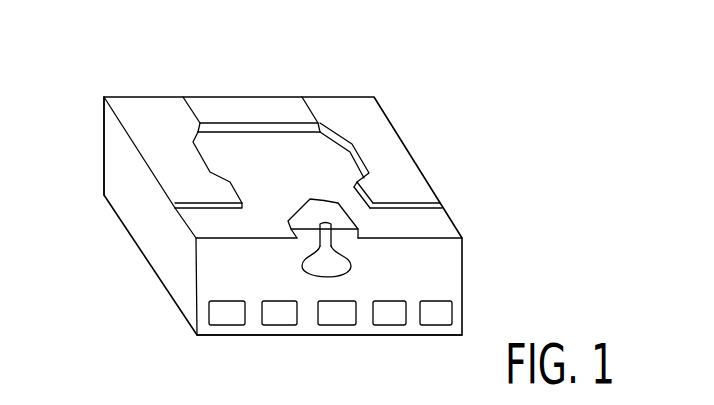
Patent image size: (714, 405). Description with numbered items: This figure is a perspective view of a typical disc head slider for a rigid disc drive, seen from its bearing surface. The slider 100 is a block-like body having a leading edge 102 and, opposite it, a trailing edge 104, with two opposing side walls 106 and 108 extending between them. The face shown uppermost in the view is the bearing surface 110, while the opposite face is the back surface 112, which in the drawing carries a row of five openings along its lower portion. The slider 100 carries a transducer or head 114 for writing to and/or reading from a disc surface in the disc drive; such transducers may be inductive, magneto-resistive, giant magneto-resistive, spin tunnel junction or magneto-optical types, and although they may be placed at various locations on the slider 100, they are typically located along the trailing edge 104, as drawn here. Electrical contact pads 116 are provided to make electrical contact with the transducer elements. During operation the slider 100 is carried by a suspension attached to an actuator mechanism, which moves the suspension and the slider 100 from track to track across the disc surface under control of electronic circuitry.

The slider 100 is at (430, 141).
The leading edge 102 is at (222, 97).
The trailing edge 104 is at (453, 252).
The side wall 106 is at (118, 182).
The side wall 108 is at (433, 182).
The bearing surface 110 is at (334, 116).
The back surface 112 is at (235, 338).
The transducer 114 is at (304, 259).
The electrical contact pads 116 is at (435, 325).